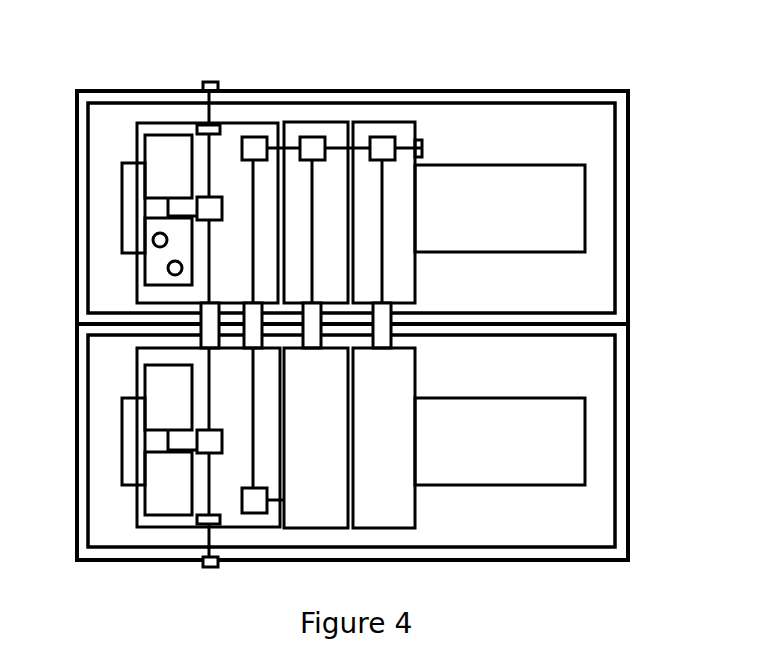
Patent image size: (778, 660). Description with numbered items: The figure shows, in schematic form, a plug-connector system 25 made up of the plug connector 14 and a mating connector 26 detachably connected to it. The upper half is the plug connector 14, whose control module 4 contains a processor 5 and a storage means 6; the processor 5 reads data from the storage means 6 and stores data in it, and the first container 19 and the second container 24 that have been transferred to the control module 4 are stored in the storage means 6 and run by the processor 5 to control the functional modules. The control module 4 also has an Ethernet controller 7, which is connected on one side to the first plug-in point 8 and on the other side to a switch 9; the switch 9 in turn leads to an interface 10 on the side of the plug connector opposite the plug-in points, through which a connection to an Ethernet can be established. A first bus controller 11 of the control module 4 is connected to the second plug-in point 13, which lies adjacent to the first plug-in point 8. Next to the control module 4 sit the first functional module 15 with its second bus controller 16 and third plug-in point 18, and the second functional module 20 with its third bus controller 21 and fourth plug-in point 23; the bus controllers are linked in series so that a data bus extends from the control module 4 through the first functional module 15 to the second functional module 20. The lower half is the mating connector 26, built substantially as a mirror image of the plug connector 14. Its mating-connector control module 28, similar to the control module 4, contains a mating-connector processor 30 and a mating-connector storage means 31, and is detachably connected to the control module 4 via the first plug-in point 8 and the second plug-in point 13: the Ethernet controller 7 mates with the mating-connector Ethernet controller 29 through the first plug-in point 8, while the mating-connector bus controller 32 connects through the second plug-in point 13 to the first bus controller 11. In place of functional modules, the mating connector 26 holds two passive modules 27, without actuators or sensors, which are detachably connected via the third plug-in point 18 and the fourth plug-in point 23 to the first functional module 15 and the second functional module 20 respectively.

The plug-connector system 25 is at (145, 58).
The plug connector 14 is at (458, 90).
The mating connector 26 is at (513, 561).
The control module 4 is at (136, 160).
The second container 24 is at (130, 240).
The processor 5 is at (168, 166).
The storage means 6 is at (132, 264).
The first container 19 is at (168, 268).
The interface 10 is at (215, 84).
The switch 9 is at (203, 125).
The Ethernet controller 7 is at (223, 202).
The first bus controller 11 is at (242, 160).
The first functional module 15 is at (315, 121).
The second functional module 20 is at (418, 288).
The third plug-in point 18 is at (310, 300).
The fourth plug-in point 23 is at (388, 300).
The second bus controller 16 is at (323, 162).
The third bus controller 21 is at (393, 162).
The first plug-in point 8 is at (217, 300).
The second plug-in point 13 is at (253, 297).
The mating-connector control module 28 is at (133, 380).
The mating-connector storage means 31 is at (180, 408).
The mating-connector processor 30 is at (180, 500).
The mating-connector Ethernet controller 29 is at (223, 435).
The mating-connector bus controller 32 is at (243, 489).
The passive modules 27 is at (418, 374).